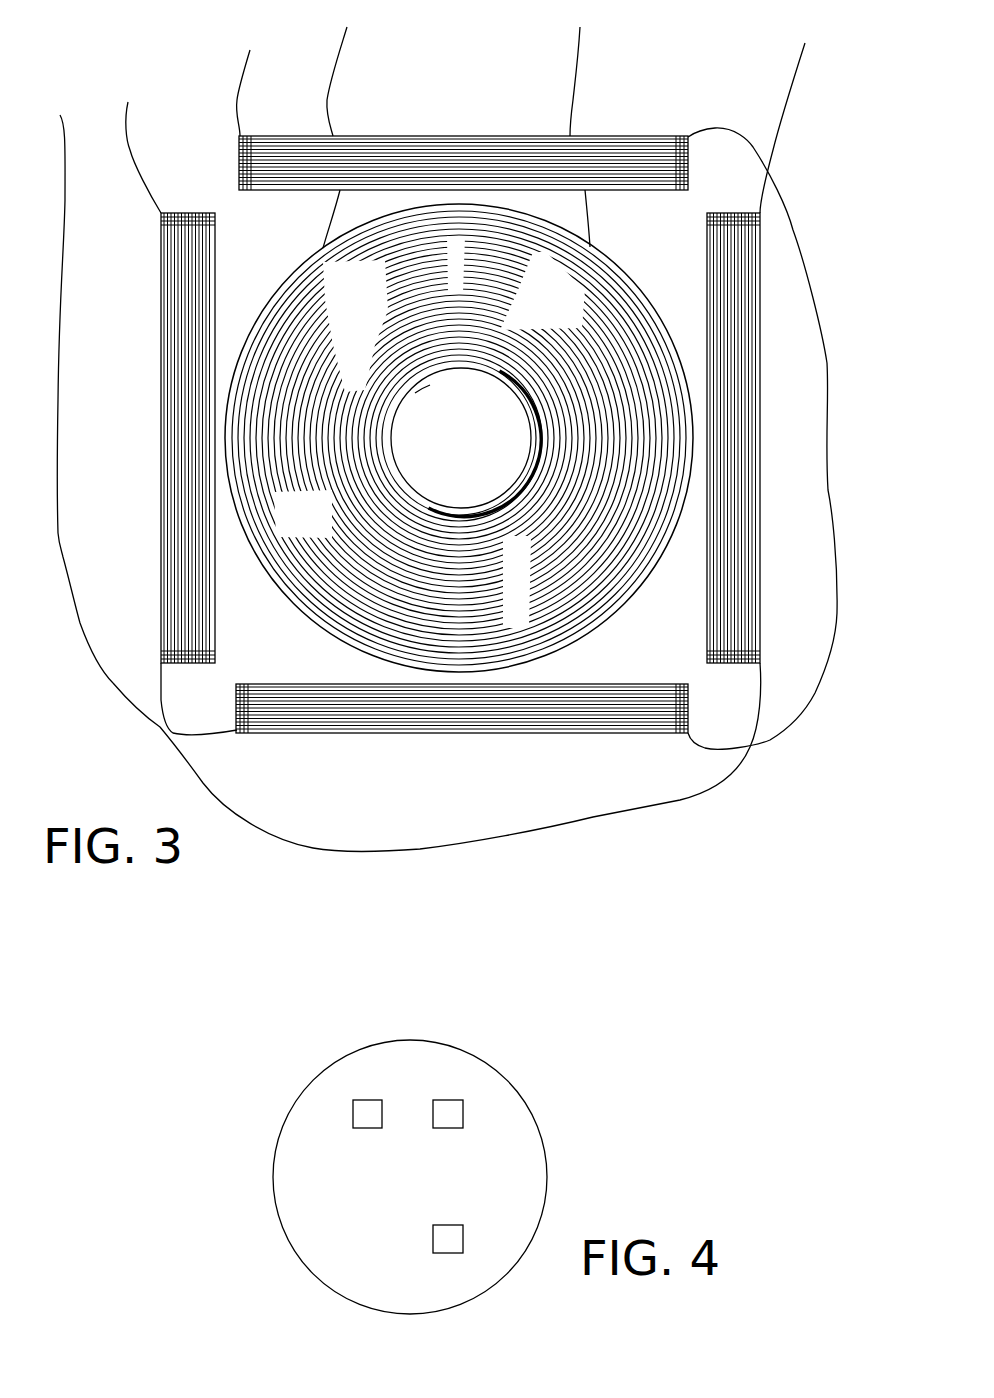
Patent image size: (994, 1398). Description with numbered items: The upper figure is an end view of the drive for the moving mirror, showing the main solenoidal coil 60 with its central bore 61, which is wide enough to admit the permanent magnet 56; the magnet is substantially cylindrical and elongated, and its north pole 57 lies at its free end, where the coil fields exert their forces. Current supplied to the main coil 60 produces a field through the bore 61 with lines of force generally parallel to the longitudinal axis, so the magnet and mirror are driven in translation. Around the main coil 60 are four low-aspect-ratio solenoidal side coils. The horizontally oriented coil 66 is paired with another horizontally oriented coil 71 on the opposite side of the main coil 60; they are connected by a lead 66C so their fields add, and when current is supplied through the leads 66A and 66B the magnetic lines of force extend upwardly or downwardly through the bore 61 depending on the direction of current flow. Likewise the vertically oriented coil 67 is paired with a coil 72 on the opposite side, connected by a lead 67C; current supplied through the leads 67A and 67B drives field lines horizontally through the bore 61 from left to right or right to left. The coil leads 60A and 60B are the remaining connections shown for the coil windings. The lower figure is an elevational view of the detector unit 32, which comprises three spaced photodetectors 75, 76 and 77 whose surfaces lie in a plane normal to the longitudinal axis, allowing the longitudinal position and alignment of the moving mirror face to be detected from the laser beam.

In FIG. 3, the main solenoidal coil 60 is at (642, 565).
In FIG. 3, the coil lead 60A is at (350, 28).
In FIG. 3, the lead wire 60B is at (580, 60).
In FIG. 3, the permanent magnet 56 is at (503, 377).
In FIG. 3, the north pole 57 is at (413, 392).
In FIG. 3, the central bore 61 is at (455, 526).
In FIG. 3, the side coil 66 is at (470, 737).
In FIG. 3, the coil lead 66A is at (63, 557).
In FIG. 3, the coil lead 66B is at (231, 80).
In FIG. 3, the lead 66C is at (832, 510).
In FIG. 3, the side coil 67 is at (173, 362).
In FIG. 3, the coil lead 67A is at (130, 150).
In FIG. 3, the coil lead 67B is at (793, 75).
In FIG. 3, the lead 67C is at (593, 818).
In FIG. 3, the coil 71 is at (432, 136).
In FIG. 3, the coil 72 is at (760, 397).
In FIG. 4, the detector unit 32 is at (272, 1162).
In FIG. 4, the photodetector 75 is at (360, 1100).
In FIG. 4, the photodetector 76 is at (450, 1100).
In FIG. 4, the photodetector 77 is at (463, 1240).